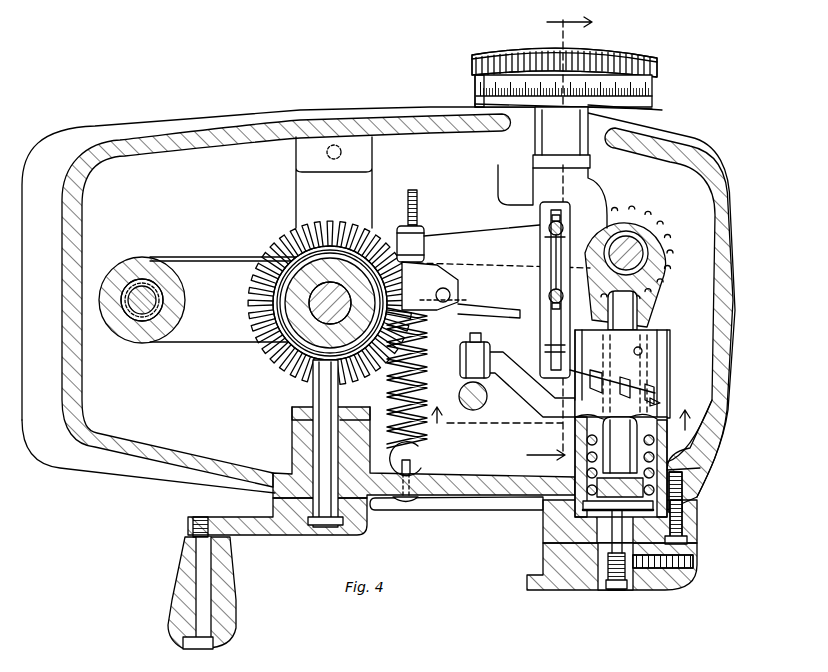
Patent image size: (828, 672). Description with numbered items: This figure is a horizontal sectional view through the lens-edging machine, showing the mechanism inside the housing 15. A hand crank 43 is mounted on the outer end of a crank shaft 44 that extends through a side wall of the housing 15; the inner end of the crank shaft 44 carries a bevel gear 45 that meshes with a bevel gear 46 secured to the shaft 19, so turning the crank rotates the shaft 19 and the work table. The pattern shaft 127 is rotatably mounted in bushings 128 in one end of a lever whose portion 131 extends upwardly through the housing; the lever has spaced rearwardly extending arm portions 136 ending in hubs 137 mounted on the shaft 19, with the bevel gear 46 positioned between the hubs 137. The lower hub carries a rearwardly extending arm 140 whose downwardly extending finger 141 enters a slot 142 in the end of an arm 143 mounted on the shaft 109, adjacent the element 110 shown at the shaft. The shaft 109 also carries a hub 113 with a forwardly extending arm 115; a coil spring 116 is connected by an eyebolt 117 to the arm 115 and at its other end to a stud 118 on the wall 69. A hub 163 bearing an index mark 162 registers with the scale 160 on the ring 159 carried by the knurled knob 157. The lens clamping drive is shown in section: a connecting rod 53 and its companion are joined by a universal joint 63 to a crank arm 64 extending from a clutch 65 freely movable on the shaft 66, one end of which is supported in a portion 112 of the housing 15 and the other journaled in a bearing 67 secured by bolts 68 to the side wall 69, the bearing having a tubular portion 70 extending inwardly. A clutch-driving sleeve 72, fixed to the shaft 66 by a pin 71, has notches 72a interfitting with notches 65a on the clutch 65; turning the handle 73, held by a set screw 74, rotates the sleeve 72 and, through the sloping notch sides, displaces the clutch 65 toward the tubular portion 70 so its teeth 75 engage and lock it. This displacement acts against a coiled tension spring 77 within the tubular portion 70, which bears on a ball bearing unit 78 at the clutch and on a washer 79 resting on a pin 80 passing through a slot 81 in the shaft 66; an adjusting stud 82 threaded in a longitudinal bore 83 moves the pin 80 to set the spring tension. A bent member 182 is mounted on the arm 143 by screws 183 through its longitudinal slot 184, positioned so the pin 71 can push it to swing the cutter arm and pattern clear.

The housing 15 is at (106, 127).
The shaft 19 is at (316, 304).
The hand crank 43 is at (250, 540).
The crank shaft 44 is at (318, 439).
The bevel gear 45 is at (300, 396).
The bevel gear 46 is at (258, 364).
The connecting rod 53 is at (459, 393).
The universal joint 63 is at (480, 382).
The crank arm 64 is at (508, 368).
The clutch 65 is at (660, 402).
The notches 65a is at (650, 384).
The shaft 66 is at (638, 315).
The bearing 67 is at (545, 523).
The bolts 68 is at (690, 528).
The side wall 69 is at (465, 508).
The tubular portion 70 is at (577, 467).
The pin 71 is at (642, 350).
The clutch-driving sleeve 72 is at (668, 356).
The notches 72a is at (613, 377).
The handle 73 is at (540, 592).
The set screw 74 is at (695, 563).
The teeth 75 is at (577, 438).
The coiled tension spring 77 is at (672, 468).
The ball bearing unit 78 is at (682, 459).
The washer 79 is at (693, 491).
The pin 80 is at (581, 502).
The slot 81 is at (580, 497).
The adjusting stud 82 is at (614, 593).
The longitudinal bore 83 is at (622, 592).
The shaft 109 is at (628, 248).
The shaft 110 is at (647, 257).
The portion 112 is at (648, 294).
The hub 113 is at (603, 207).
The arm 115 is at (478, 234).
The coil spring 116 is at (427, 340).
The eyebolt 117 is at (420, 206).
The stud 118 is at (402, 500).
The shaft 127 is at (134, 322).
The bushings 128 is at (128, 262).
The portion 131 is at (146, 262).
The arm portions 136 is at (203, 275).
The hubs 137 is at (287, 283).
The arm 140 is at (443, 285).
The finger 141 is at (468, 300).
The slot 142 is at (456, 291).
The arm 143 is at (517, 310).
The knurled knob 157 is at (610, 56).
The ring 159 is at (655, 89).
The scale 160 is at (479, 98).
The index mark 162 is at (605, 110).
The hub 163 is at (535, 137).
The bent member 182 is at (543, 342).
The screws 183 is at (548, 226).
The slot 184 is at (550, 264).